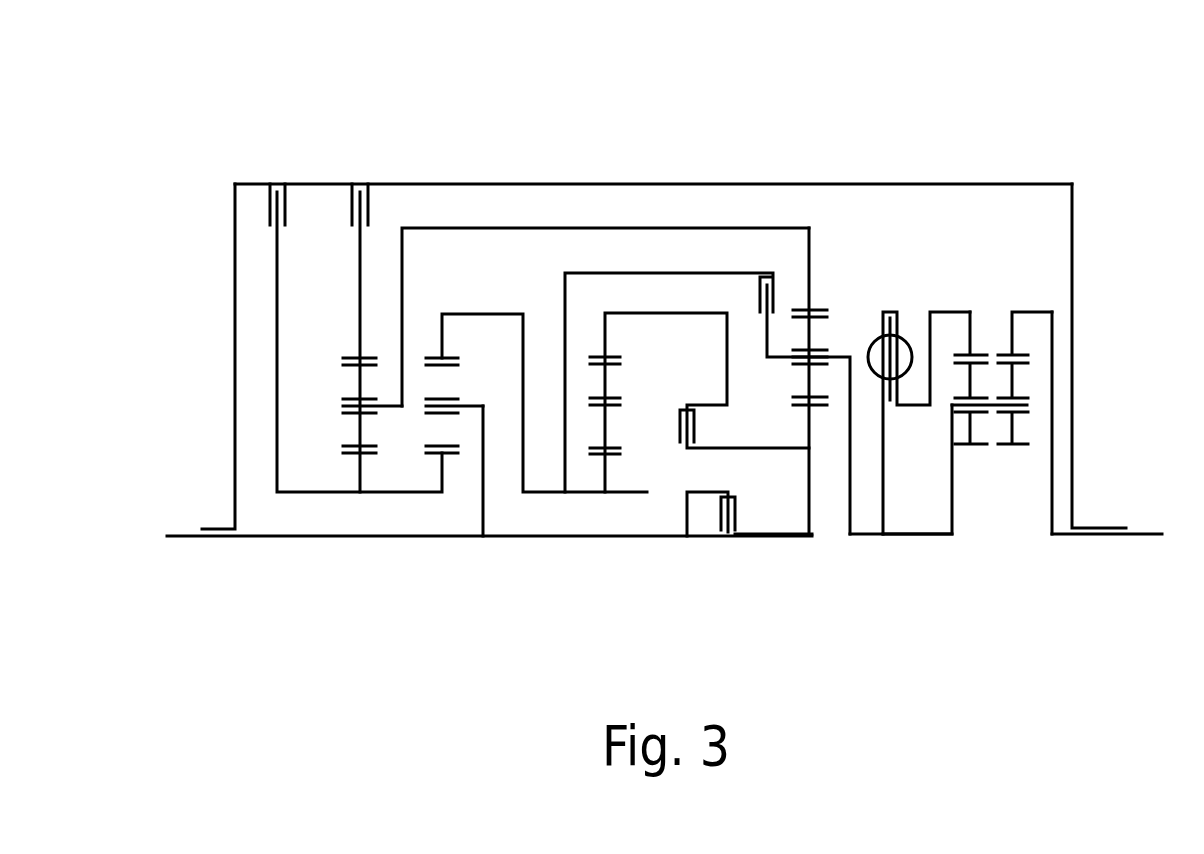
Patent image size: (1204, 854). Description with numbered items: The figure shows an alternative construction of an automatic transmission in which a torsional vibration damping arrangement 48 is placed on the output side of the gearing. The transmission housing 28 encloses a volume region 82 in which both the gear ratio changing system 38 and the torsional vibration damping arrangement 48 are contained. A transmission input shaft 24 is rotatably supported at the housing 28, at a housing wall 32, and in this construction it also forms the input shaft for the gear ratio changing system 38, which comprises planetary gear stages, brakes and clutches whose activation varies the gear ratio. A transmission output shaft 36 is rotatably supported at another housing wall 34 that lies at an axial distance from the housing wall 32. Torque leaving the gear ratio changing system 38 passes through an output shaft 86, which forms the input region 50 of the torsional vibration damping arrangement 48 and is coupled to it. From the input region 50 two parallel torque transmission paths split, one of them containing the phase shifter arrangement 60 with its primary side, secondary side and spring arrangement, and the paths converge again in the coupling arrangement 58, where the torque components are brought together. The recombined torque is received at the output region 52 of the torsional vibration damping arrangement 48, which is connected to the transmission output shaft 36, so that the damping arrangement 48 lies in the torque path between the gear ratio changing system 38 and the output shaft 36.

The transmission input shaft 24 is at (378, 537).
The transmission housing 28 is at (608, 184).
The housing wall 32 is at (235, 308).
The housing wall 34 is at (1073, 326).
The transmission output shaft 36 is at (1153, 537).
The gear ratio changing system 38 is at (472, 196).
The torsional vibration damping arrangement 48 is at (998, 262).
The input region 50 is at (877, 554).
The output region 52 is at (1063, 452).
The coupling arrangement 58 is at (1032, 300).
The phase shifter arrangement 60 is at (912, 278).
The volume region 82 is at (875, 200).
The output shaft 86 is at (863, 537).